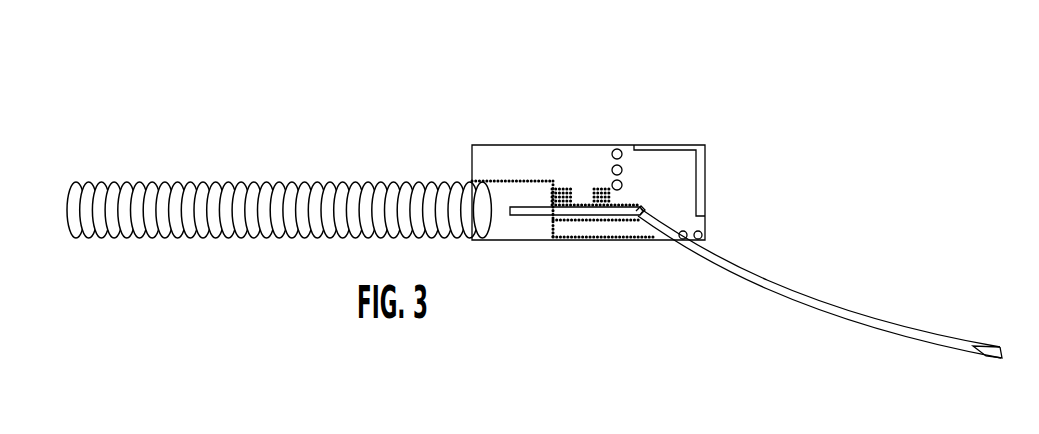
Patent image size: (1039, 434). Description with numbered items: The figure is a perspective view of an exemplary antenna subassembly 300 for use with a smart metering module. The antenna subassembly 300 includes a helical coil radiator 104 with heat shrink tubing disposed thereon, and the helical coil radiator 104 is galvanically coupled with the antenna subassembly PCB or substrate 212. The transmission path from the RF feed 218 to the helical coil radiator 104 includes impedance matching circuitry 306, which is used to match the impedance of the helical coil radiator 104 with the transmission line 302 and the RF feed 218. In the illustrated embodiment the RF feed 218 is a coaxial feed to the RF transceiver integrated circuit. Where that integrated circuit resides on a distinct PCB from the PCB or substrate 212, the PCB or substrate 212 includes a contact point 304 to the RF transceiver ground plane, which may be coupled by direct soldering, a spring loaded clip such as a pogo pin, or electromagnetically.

The antenna subassembly 300 is at (715, 92).
The helical coil radiator 104 is at (275, 220).
The PCB or substrate 212 is at (510, 165).
The contact point 304 is at (706, 192).
The impedance matching circuitry 306 is at (565, 195).
The transmission line 302 is at (608, 212).
The RF feed 218 is at (838, 318).